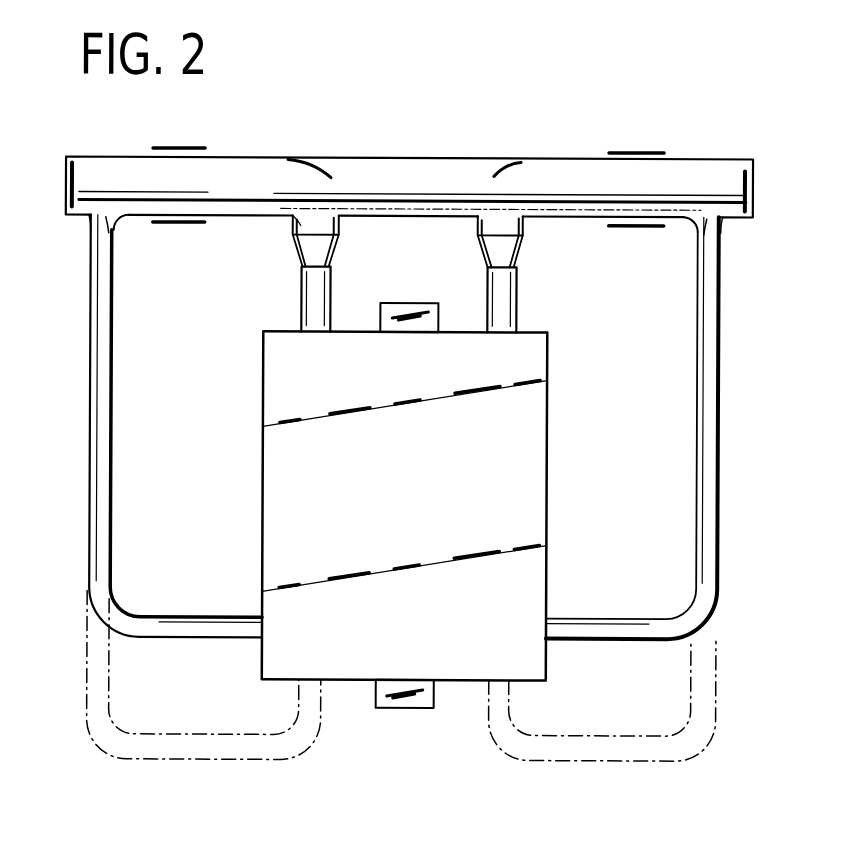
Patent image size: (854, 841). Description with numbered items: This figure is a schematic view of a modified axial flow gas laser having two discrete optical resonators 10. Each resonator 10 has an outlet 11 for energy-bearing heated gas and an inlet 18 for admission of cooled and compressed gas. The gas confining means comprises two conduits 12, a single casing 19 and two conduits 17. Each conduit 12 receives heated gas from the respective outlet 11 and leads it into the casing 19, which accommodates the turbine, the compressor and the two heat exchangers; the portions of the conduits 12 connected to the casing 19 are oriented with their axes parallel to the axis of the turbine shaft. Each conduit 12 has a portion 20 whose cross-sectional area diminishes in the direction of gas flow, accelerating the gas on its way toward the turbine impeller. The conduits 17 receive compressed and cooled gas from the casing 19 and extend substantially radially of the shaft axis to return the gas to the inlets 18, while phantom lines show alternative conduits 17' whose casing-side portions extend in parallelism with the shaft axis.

The optical resonator 10 is at (187, 187).
The outlet 11 is at (312, 222).
The conduit 12 is at (310, 303).
The conduit 17 is at (395, 426).
The conduit 17' is at (401, 676).
The inlet 18 is at (105, 228).
The casing 19 is at (428, 442).
The portion 20 is at (310, 254).